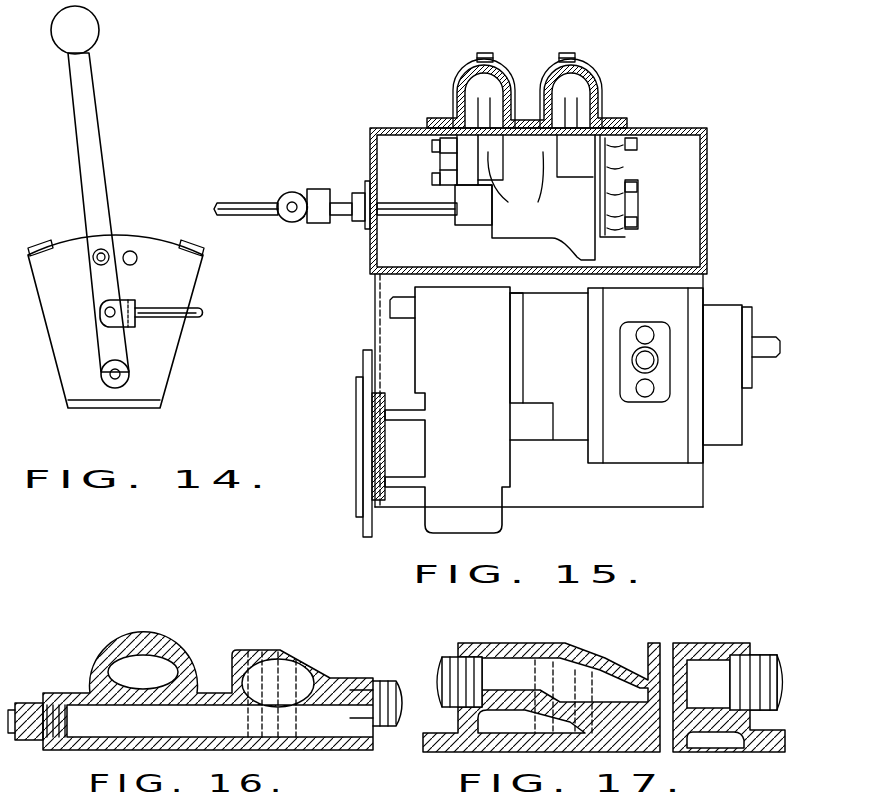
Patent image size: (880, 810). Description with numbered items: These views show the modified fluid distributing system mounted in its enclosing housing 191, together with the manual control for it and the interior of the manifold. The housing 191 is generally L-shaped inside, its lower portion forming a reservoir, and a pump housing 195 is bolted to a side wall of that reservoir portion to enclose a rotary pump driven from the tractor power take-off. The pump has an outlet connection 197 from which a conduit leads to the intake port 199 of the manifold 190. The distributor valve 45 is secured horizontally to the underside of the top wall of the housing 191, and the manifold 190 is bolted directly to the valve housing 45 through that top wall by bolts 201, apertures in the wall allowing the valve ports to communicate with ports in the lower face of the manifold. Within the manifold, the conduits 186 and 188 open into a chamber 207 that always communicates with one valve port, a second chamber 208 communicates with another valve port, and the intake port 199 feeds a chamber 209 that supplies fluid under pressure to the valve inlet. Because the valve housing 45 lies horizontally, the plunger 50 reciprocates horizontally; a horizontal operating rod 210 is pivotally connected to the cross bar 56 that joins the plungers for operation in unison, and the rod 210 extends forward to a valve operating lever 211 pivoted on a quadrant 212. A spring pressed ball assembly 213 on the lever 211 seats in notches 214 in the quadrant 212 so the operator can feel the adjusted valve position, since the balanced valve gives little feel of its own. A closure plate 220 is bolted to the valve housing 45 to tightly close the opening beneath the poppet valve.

In FIG. 14, the valve operating lever 211 is at (97, 112).
In FIG. 14, the quadrant 212 is at (72, 370).
In FIG. 14, the spring pressed ball assembly 213 is at (107, 251).
In FIG. 14, the notches 214 is at (132, 252).
In FIG. 14, the operating rod 210 is at (200, 318).
In FIG. 15, the operating rod 210 is at (243, 200).
In FIG. 15, the bolts 201 is at (560, 52).
In FIG. 15, the manifold 190 is at (600, 88).
In FIG. 17, the manifold 190 is at (592, 643).
In FIG. 15, the housing 191 is at (678, 129).
In FIG. 15, the plate 220 is at (637, 186).
In FIG. 15, the cross bar 56 is at (324, 192).
In FIG. 15, the plunger 50 is at (403, 198).
In FIG. 15, the distributor valve 45 is at (508, 223).
In FIG. 15, the outlet connection 197 is at (645, 375).
In FIG. 15, the pump housing 195 is at (612, 452).
In FIG. 16, the chamber 207 is at (136, 676).
In FIG. 17, the chamber 207 is at (583, 700).
In FIG. 16, the chamber 208 is at (263, 665).
In FIG. 16, the intake port 199 is at (388, 683).
In FIG. 16, the chamber 209 is at (307, 765).
In FIG. 17, the conduit 188 is at (442, 660).
In FIG. 17, the conduit 186 is at (767, 655).